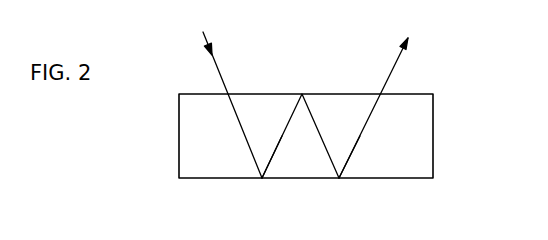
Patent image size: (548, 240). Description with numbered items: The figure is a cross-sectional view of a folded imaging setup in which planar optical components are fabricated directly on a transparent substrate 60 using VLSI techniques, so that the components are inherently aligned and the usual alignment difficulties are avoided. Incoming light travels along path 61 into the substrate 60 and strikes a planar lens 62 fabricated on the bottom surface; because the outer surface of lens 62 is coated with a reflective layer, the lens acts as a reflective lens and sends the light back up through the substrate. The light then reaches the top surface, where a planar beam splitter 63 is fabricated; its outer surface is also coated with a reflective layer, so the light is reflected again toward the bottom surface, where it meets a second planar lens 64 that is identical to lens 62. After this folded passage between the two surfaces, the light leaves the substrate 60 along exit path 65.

The substrate 60 is at (433, 132).
The incoming light path 61 is at (203, 36).
The planar lens 62 is at (262, 180).
The planar beam splitter 63 is at (303, 93).
The planar lens 64 is at (339, 180).
The exit light path 65 is at (397, 60).